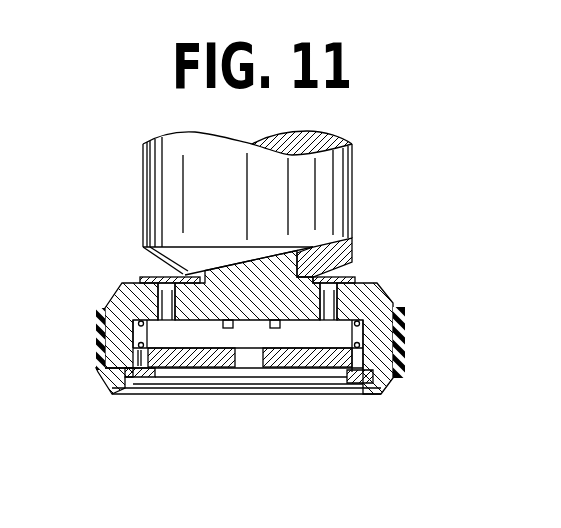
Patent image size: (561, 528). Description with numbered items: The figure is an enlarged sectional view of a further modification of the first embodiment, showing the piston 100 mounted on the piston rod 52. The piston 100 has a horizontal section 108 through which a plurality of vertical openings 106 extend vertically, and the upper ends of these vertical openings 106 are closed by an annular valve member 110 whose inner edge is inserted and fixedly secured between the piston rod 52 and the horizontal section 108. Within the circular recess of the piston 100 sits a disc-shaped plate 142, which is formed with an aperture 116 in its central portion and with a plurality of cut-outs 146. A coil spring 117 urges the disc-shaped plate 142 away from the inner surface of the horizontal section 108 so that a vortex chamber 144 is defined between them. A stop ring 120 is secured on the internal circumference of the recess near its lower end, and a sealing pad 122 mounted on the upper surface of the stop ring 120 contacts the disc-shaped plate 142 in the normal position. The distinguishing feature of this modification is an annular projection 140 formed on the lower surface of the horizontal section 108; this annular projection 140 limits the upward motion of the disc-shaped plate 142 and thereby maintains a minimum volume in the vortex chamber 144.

The piston rod 52 is at (328, 184).
The piston 100 is at (110, 291).
The vertical openings 106 is at (348, 283).
The horizontal section 108 is at (342, 292).
The annular valve member 110 is at (165, 273).
The aperture 116 is at (248, 362).
The coil spring 117 is at (136, 333).
The stop ring 120 is at (125, 390).
The sealing pad 122 is at (100, 372).
The annular projection 140 is at (225, 330).
The disc-shaped plate 142 is at (325, 370).
The vortex chamber 144 is at (203, 332).
The cut-outs 146 is at (137, 375).